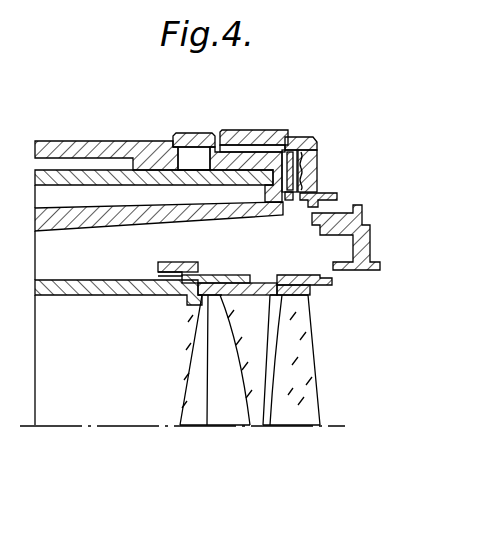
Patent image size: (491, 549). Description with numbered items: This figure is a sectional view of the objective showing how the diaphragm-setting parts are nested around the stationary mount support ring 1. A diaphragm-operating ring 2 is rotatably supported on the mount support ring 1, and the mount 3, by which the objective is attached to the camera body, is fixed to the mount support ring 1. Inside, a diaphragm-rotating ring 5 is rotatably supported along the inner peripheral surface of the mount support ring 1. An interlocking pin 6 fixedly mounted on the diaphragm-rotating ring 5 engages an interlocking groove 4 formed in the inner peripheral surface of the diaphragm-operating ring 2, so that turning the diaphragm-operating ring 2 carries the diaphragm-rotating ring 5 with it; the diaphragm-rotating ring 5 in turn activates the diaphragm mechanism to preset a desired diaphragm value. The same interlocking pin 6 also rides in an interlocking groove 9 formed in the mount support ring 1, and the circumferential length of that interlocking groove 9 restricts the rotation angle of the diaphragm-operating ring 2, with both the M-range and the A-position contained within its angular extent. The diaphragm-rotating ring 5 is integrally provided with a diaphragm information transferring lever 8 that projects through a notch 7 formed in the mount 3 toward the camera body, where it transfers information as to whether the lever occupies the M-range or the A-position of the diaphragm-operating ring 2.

The mount support ring 1 is at (198, 134).
The diaphragm-operating ring 2 is at (273, 131).
The mount 3 is at (312, 172).
The interlocking groove 4 is at (248, 129).
The diaphragm-rotating ring 5 is at (272, 216).
The interlocking pin 6 is at (305, 157).
The notch 7 is at (312, 192).
The diaphragm information transferring lever 8 is at (337, 197).
The interlocking groove 9 is at (290, 170).